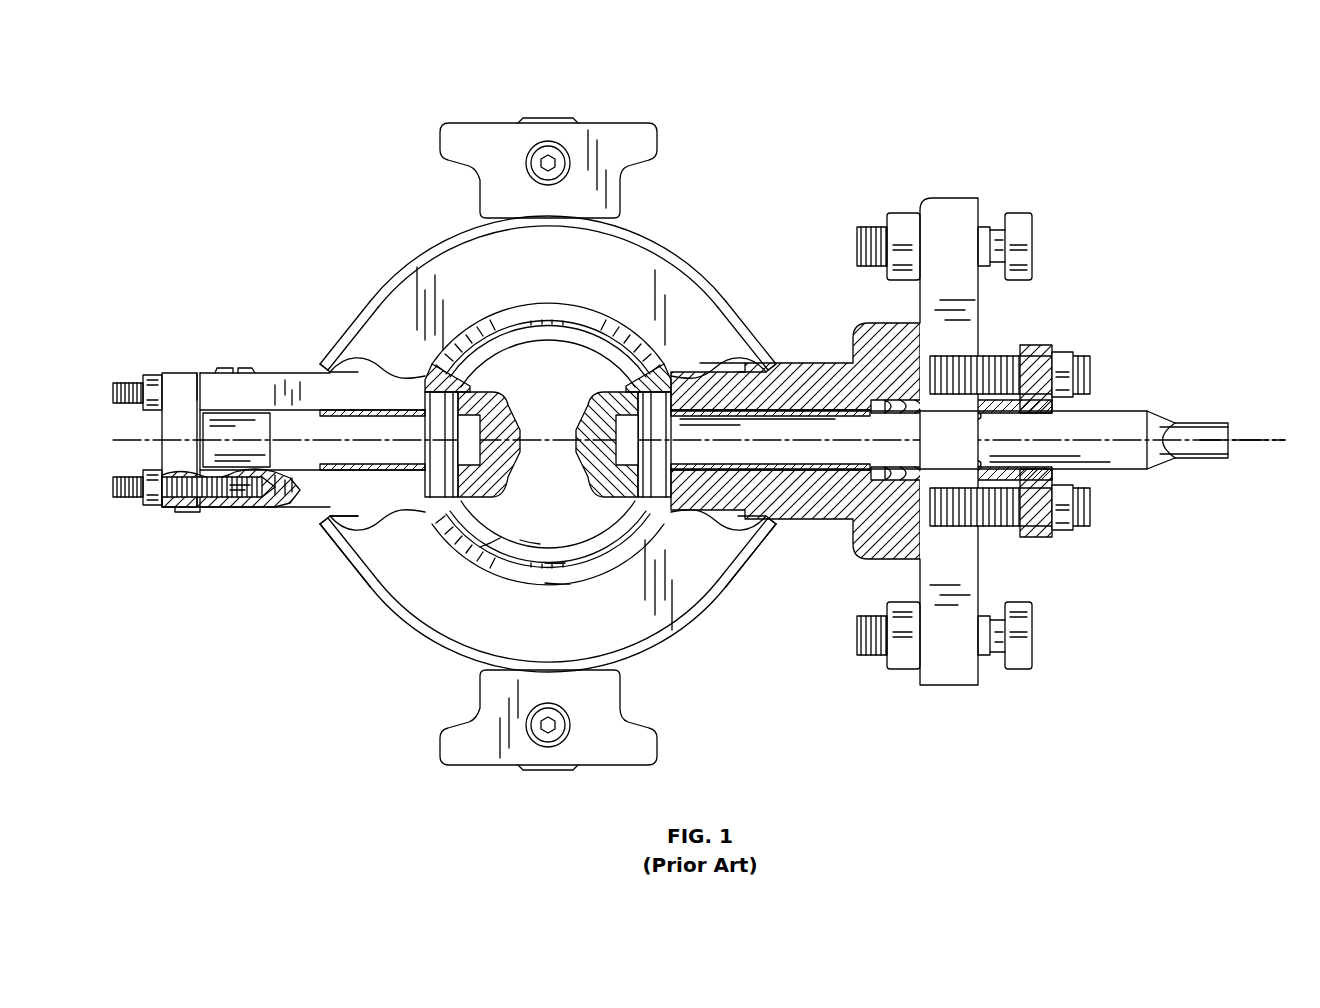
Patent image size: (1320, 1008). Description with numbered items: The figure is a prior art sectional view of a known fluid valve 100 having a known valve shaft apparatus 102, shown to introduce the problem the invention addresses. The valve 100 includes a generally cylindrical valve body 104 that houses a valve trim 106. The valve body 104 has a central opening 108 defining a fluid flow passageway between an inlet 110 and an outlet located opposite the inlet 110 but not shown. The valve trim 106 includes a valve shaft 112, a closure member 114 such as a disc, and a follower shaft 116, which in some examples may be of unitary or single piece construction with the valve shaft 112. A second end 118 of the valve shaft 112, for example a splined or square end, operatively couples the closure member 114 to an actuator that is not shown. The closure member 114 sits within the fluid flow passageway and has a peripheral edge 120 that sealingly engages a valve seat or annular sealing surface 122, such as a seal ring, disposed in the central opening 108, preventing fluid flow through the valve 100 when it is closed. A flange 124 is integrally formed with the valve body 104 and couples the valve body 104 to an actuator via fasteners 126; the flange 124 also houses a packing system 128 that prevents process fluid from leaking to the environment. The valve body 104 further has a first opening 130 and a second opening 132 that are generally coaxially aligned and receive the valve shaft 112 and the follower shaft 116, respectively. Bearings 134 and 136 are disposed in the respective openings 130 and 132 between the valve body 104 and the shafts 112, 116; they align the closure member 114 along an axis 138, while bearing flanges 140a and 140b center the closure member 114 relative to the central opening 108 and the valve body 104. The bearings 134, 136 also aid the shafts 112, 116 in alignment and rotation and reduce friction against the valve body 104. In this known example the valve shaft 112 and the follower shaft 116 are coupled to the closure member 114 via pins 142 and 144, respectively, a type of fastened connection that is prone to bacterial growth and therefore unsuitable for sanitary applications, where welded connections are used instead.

The fluid valve 100 is at (258, 98).
The valve shaft apparatus 102 is at (265, 600).
The valve body 104 is at (647, 222).
The valve trim 106 is at (665, 340).
The central opening 108 is at (456, 545).
The inlet 110 is at (531, 560).
The valve shaft 112 is at (1115, 412).
The closure member 114 is at (487, 545).
The follower shaft 116 is at (316, 420).
The second end 118 is at (1193, 456).
The peripheral edge 120 is at (560, 590).
The annular sealing surface 122 is at (553, 575).
The flange 124 is at (950, 199).
The flange bolts 126 is at (1034, 248).
The packing system 128 is at (880, 500).
The first opening 130 is at (797, 408).
The second opening 132 is at (312, 475).
The bearing 134 is at (716, 360).
The bearing 136 is at (366, 372).
The axis 138 is at (1250, 440).
The bearing flange 140a is at (740, 560).
The bearing flange 140b is at (393, 515).
The pin 142 is at (652, 362).
The pin 144 is at (437, 362).